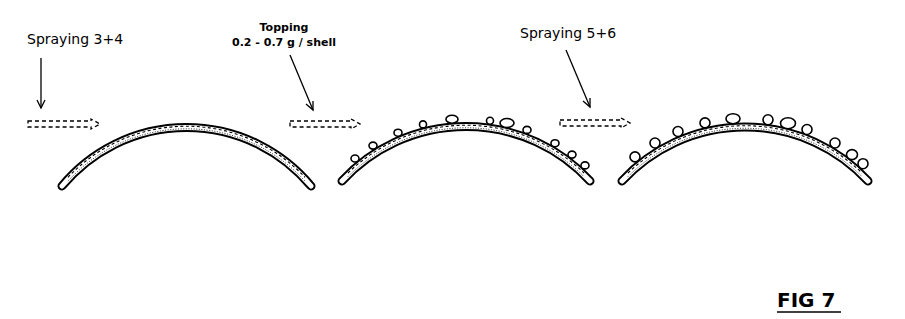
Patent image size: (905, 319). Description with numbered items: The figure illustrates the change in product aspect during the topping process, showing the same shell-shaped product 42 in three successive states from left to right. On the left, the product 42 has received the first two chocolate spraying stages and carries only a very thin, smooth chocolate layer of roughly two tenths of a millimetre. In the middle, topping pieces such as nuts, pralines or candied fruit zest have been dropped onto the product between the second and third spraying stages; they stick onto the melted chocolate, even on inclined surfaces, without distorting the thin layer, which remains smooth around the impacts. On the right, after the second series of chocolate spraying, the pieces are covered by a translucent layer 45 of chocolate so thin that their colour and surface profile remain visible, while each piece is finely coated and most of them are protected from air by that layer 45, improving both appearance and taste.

The product 42 is at (165, 137).
The translucent layer of chocolate 45 is at (788, 117).